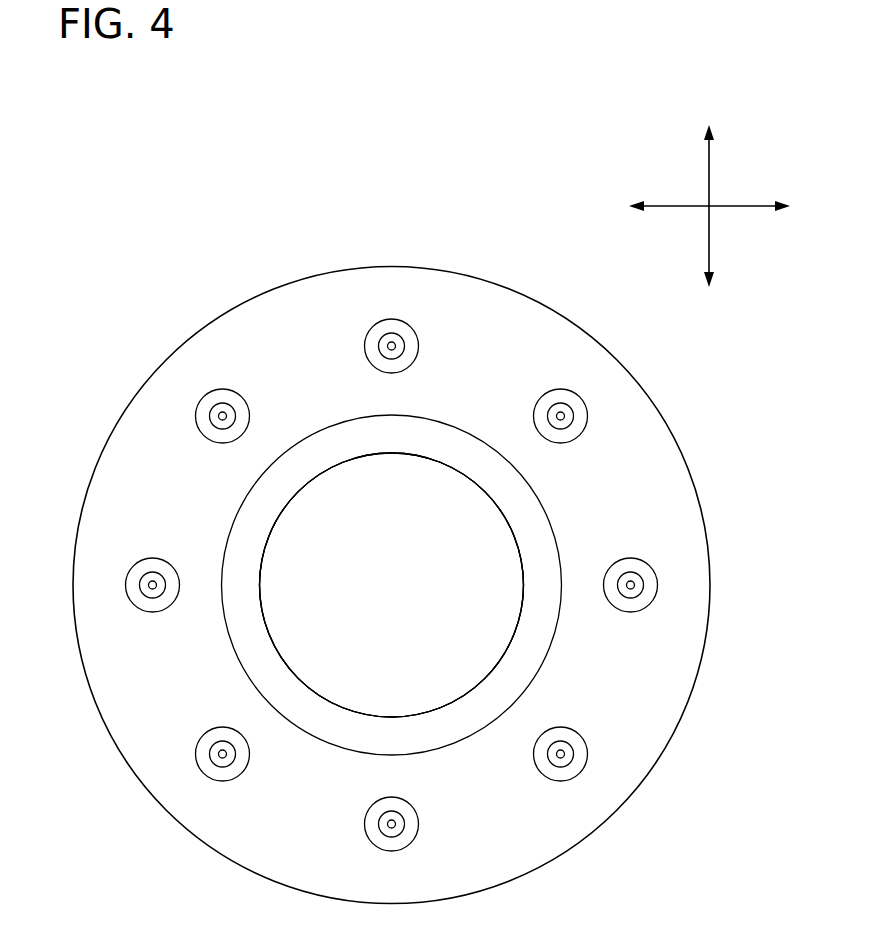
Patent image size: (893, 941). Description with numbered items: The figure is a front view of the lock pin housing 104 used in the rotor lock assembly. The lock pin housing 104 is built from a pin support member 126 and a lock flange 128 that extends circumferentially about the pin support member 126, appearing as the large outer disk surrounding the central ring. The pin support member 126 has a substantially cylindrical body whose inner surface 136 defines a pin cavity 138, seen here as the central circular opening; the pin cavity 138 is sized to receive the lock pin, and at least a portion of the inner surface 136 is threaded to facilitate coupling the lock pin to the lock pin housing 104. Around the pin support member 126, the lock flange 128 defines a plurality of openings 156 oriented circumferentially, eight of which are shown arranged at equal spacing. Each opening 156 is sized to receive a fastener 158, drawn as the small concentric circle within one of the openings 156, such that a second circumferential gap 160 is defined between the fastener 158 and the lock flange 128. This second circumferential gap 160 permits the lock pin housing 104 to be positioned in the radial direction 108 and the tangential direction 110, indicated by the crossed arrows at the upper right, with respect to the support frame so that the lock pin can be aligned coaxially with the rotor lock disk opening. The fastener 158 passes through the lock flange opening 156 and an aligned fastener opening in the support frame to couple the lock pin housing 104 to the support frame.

The lock pin housing 104 is at (243, 212).
The radial direction 108 is at (713, 167).
The tangential direction 110 is at (680, 205).
The pin support member 126 is at (525, 512).
The lock flange 128 is at (652, 400).
The inner surface 136 is at (470, 480).
The pin cavity 138 is at (371, 627).
The openings 156 is at (409, 311).
The fastener 158 is at (226, 404).
The second circumferential gap 160 is at (205, 405).